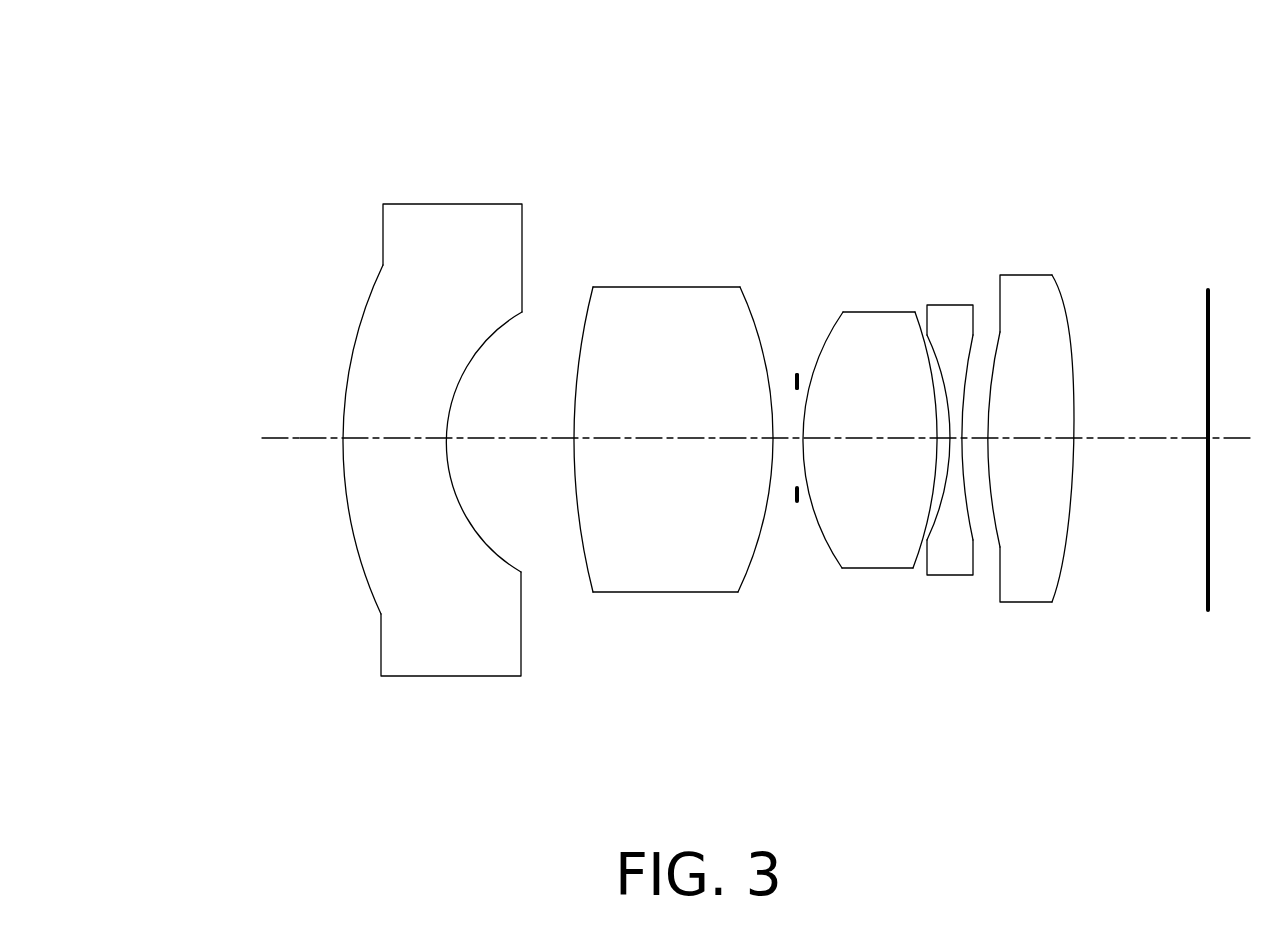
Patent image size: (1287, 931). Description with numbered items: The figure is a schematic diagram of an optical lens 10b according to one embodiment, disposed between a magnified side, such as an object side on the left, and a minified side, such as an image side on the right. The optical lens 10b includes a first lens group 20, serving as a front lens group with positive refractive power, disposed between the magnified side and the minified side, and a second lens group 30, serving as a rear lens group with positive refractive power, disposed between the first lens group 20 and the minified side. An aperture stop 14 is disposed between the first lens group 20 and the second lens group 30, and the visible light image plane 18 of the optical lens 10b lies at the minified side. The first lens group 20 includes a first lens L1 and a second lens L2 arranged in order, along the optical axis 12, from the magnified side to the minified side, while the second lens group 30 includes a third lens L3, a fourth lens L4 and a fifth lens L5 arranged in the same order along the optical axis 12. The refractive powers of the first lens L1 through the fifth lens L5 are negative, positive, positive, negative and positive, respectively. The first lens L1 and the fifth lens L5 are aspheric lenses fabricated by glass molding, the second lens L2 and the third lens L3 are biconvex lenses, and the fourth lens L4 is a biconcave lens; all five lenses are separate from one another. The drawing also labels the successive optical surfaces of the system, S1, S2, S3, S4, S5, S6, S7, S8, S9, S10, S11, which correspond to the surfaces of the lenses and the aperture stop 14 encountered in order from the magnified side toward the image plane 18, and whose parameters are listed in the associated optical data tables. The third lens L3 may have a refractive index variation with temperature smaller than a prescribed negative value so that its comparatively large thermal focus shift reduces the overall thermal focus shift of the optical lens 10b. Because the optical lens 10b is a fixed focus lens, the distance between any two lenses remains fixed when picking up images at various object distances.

The optical lens 10b is at (202, 57).
The optical axis 12 is at (289, 440).
The aperture stop 14 is at (798, 373).
The visible light image plane 18 is at (1209, 560).
The first lens group 20 is at (648, 88).
The second lens group 30 is at (1045, 127).
The first lens L1 is at (450, 203).
The second lens L2 is at (628, 287).
The third lens L3 is at (873, 310).
The fourth lens L4 is at (950, 305).
The fifth lens L5 is at (1024, 275).
The object-side surface of first lens S1 is at (362, 565).
The image-side surface of first lens S2 is at (480, 528).
The object-side surface of second lens S3 is at (583, 545).
The image-side surface of second lens S4 is at (763, 545).
The aperture stop surface S5 is at (797, 501).
The object-side surface of third lens S6 is at (828, 543).
The image-side surface of third lens S7 is at (927, 523).
The object-side surface of fourth lens S8 is at (932, 530).
The image-side surface of fourth lens S9 is at (969, 520).
The object-side surface of fifth lens S10 is at (994, 513).
The image-side surface of fifth lens S11 is at (1065, 570).